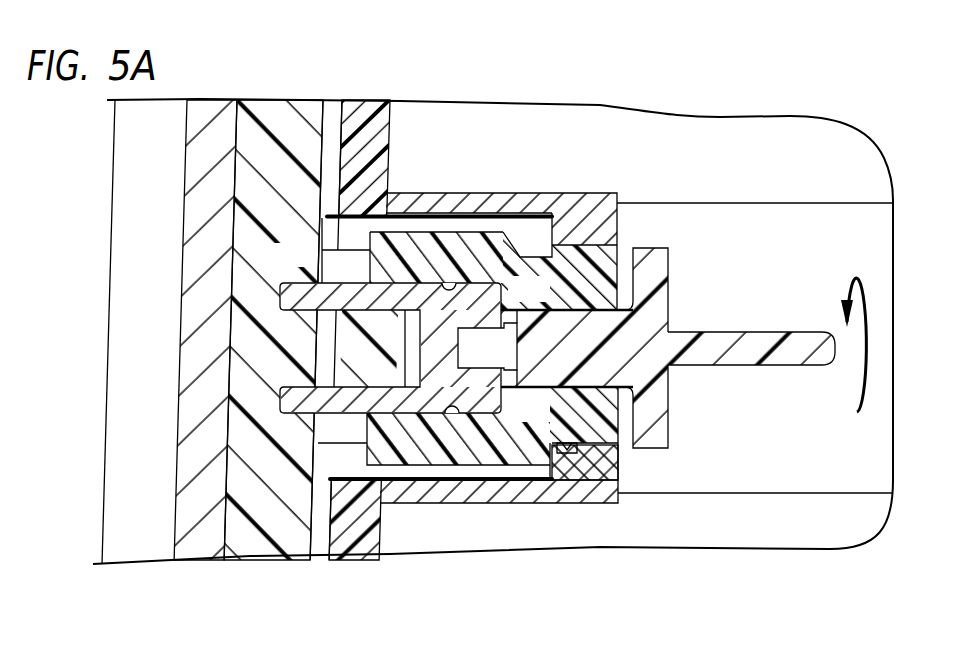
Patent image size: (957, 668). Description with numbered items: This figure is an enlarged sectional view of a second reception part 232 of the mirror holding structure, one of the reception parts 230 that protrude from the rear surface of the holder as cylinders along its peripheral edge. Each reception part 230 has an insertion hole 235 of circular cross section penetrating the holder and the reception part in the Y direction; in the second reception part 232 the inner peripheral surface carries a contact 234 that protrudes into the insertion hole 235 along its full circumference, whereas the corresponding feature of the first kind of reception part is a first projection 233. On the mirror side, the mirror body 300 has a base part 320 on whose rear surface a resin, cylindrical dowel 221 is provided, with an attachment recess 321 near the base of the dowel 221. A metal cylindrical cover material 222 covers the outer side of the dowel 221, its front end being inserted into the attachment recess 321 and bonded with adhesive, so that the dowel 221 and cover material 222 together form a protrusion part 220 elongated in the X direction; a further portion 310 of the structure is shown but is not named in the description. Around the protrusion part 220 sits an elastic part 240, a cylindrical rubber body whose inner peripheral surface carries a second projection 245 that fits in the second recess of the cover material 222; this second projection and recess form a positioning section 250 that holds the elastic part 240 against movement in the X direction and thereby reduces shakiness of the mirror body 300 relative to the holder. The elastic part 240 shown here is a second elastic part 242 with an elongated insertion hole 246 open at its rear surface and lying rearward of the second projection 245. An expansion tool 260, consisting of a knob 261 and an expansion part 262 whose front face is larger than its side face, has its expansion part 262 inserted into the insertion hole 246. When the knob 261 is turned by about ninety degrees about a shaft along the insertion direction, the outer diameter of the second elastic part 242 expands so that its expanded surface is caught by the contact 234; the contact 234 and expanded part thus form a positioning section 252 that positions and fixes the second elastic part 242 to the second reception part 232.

The protrusion part 220 is at (383, 402).
The dowel 221 is at (338, 335).
The cover material 222 is at (399, 284).
The reception part 230 is at (532, 491).
The second reception part 232 is at (584, 537).
The first projection 233 is at (450, 408).
The contact 234 is at (570, 453).
The insertion hole 235 is at (612, 445).
The elastic part 240 is at (525, 246).
The second elastic part 242 is at (608, 200).
The second projection 245 is at (452, 290).
The insertion hole 246 is at (537, 338).
The positioning section 250 is at (462, 404).
The positioning section 252 is at (613, 470).
The expansion tool 260 is at (668, 348).
The knob 261 is at (753, 360).
The expansion part 262 is at (583, 340).
The mirror body 300 is at (116, 552).
The wall inner layer 310 is at (192, 547).
The base part 320 is at (252, 543).
The attachment recess 321 is at (303, 282).